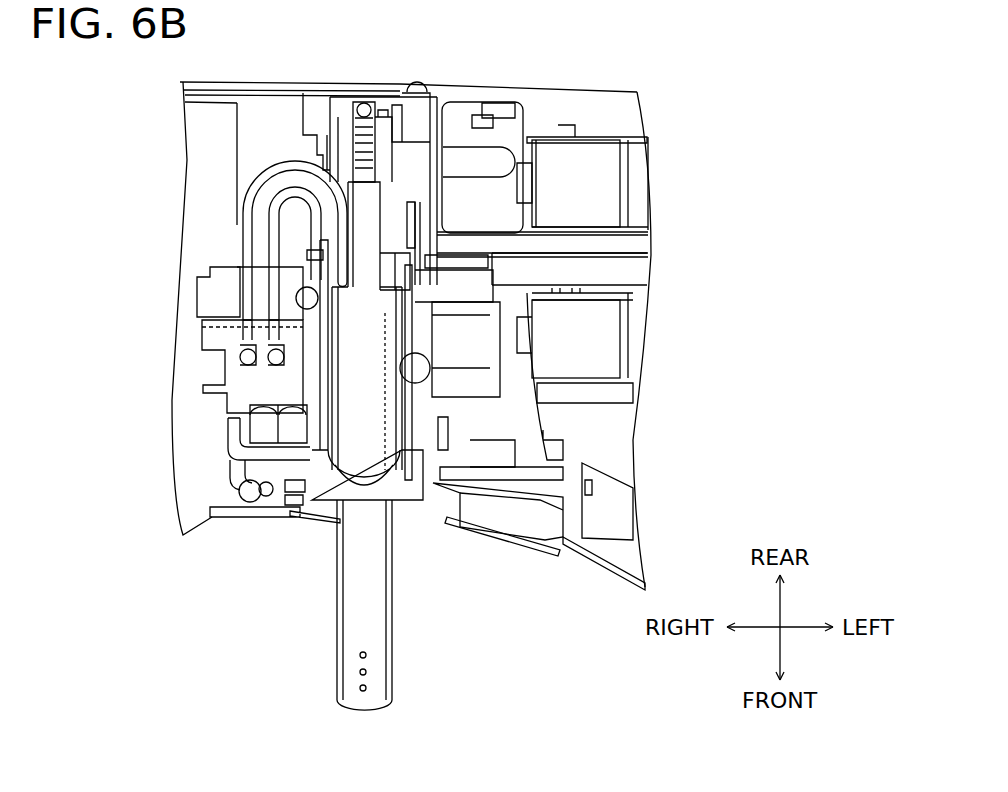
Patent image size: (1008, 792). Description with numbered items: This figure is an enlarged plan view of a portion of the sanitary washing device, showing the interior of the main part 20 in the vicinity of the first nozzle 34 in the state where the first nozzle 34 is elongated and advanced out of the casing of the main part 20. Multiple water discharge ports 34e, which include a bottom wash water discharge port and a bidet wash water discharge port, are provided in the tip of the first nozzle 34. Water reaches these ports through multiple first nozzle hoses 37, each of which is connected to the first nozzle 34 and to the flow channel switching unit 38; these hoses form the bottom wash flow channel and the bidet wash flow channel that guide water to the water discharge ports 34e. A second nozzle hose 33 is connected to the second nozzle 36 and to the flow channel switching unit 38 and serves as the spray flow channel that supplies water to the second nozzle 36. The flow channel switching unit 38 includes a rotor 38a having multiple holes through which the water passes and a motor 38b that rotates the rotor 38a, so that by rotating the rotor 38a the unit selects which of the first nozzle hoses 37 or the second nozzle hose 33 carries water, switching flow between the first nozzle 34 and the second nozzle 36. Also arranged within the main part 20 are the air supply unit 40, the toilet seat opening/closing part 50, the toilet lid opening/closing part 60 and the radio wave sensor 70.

The main part 20 is at (683, 107).
The second nozzle hose 33 is at (240, 493).
The first nozzle 34 is at (377, 440).
The water discharge ports 34e is at (368, 655).
The second nozzle 36 is at (260, 497).
The first nozzle hoses 37 is at (283, 255).
The flow channel switching unit 38 is at (176, 378).
The rotor 38a is at (230, 373).
The motor 38b is at (217, 297).
The air supply unit 40 is at (456, 118).
The toilet seat opening/closing part 50 is at (600, 352).
The toilet lid opening/closing part 60 is at (602, 193).
The radio wave sensor 70 is at (623, 247).